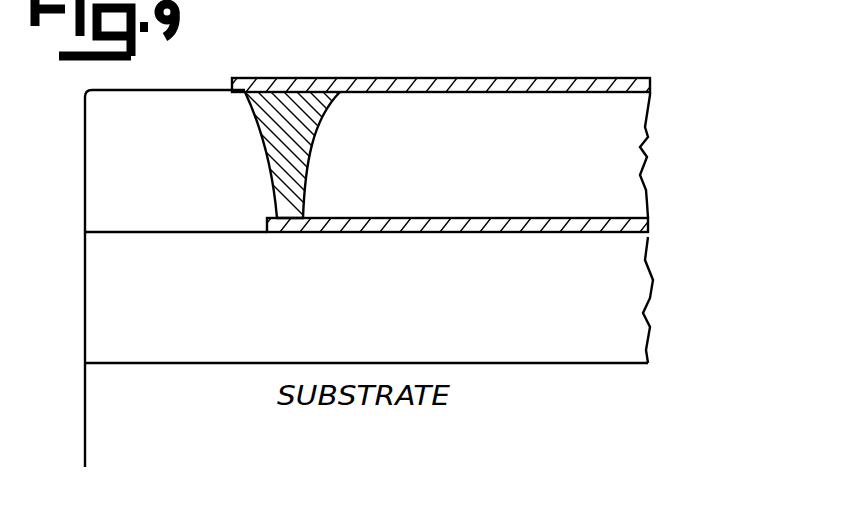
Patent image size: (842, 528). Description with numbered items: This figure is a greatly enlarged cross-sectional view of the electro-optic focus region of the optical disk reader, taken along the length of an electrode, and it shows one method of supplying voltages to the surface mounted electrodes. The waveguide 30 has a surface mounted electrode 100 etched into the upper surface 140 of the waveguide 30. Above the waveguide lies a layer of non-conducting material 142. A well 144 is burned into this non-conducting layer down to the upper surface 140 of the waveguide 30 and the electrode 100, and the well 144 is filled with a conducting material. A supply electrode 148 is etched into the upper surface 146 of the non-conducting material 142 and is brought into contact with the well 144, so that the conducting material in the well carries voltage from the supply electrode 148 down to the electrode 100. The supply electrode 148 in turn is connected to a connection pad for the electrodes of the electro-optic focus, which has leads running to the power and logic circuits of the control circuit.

The waveguide 30 is at (633, 300).
The surface mounted electrode 100 is at (642, 222).
The upper surface of the waveguide 140 is at (234, 234).
The non-conducting material 142 is at (630, 157).
The well 144 is at (303, 158).
The upper surface of the non-conducting material 146 is at (210, 90).
The supply electrode 148 is at (405, 80).